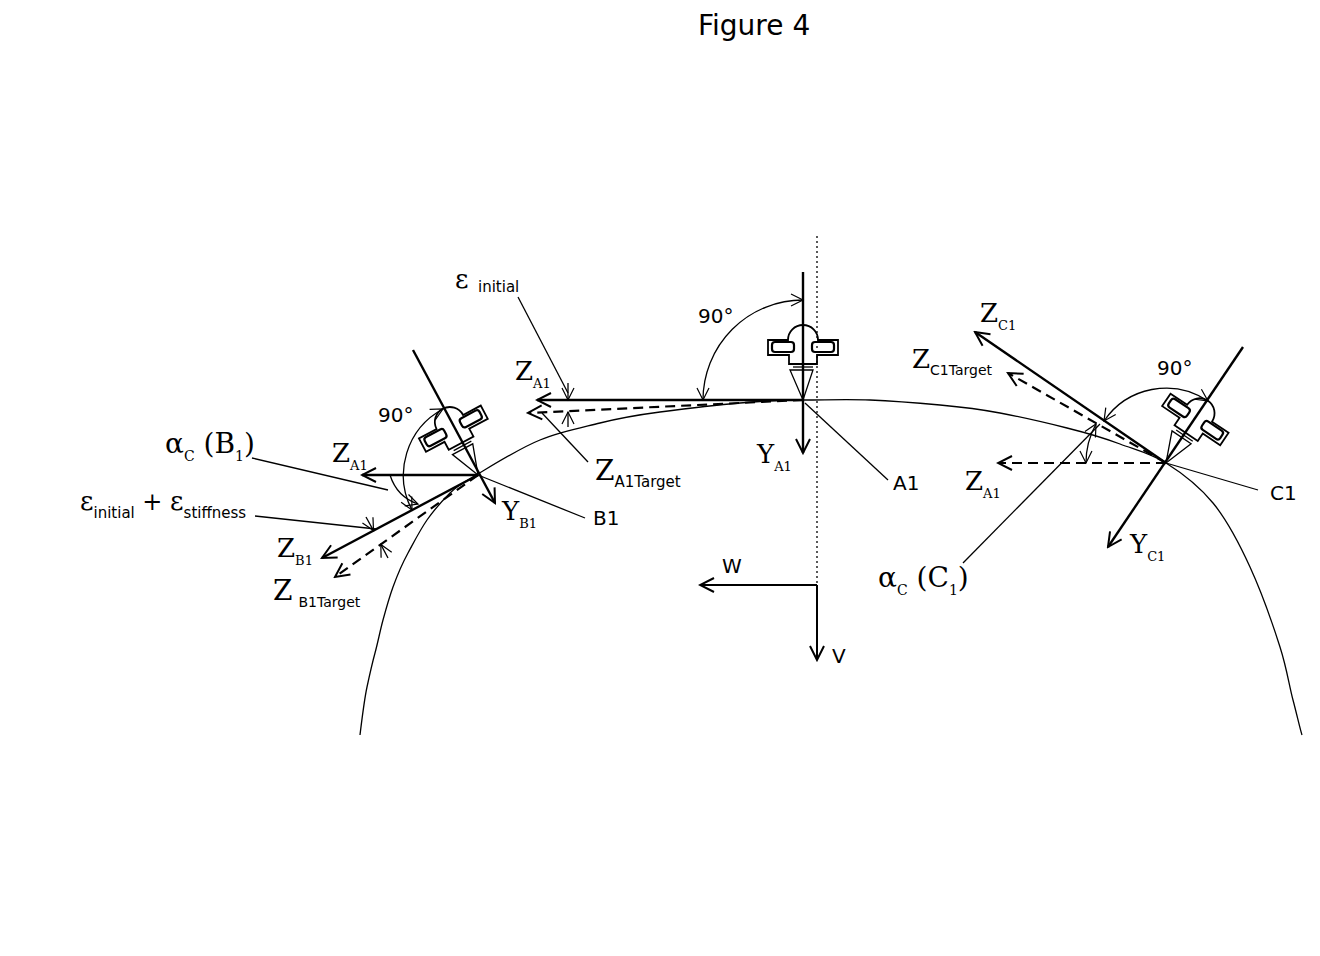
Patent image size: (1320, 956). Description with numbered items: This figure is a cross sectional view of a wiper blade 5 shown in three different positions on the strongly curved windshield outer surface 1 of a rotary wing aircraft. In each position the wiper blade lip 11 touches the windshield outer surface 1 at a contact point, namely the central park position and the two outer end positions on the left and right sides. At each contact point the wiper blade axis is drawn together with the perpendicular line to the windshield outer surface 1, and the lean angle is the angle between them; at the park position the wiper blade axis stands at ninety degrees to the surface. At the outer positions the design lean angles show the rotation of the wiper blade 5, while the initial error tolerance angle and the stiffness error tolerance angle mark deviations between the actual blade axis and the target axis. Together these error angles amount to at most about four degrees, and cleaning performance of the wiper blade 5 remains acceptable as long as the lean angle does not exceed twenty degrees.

The windshield outer surface 1 is at (375, 641).
The wiper blade 5 is at (836, 338).
The wiper blade lip 11 is at (808, 382).